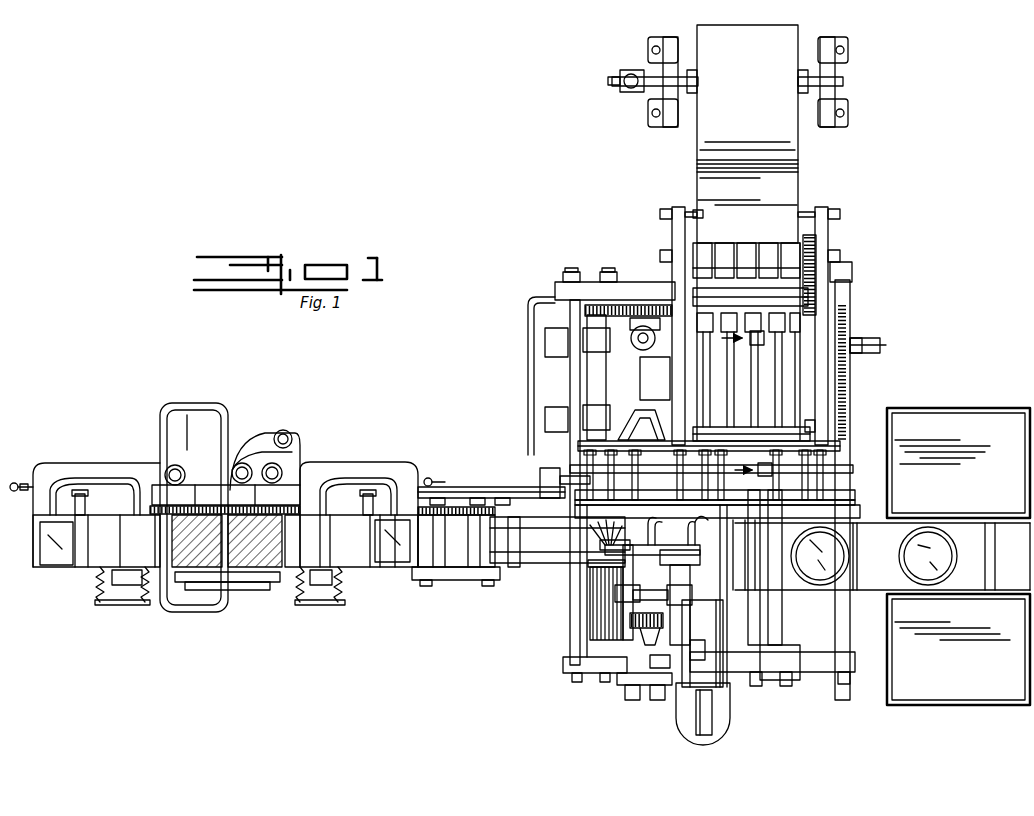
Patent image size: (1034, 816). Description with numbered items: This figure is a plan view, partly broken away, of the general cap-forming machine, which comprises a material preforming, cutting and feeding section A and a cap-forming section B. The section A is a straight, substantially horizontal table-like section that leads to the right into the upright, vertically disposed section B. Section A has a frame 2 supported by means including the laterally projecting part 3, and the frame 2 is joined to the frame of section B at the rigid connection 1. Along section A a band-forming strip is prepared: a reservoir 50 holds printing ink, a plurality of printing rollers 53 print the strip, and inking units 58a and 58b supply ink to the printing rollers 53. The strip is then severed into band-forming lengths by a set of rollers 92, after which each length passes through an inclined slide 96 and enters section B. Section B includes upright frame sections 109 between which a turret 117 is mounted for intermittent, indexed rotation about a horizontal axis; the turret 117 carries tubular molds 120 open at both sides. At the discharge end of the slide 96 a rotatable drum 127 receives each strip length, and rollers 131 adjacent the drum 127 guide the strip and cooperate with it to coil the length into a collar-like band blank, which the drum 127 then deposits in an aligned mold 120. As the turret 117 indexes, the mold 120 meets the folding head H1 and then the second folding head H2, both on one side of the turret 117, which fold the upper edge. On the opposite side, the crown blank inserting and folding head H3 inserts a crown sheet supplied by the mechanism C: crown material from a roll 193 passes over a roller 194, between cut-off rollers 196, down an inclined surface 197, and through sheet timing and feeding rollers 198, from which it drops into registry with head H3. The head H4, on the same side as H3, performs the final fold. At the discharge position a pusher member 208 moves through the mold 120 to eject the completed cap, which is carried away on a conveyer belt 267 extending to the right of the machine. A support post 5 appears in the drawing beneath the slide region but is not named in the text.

The rigid connection 1 is at (553, 488).
The frame 2 is at (472, 493).
The laterally projecting part 3 is at (213, 430).
The support post 5 is at (537, 545).
The reservoir 50 is at (62, 553).
The printing rollers 53 is at (243, 560).
The inking unit 58a is at (82, 466).
The inking unit 58b is at (323, 467).
The set of rollers 92 is at (448, 555).
The inclined slide 96 is at (555, 558).
The upright frame sections 109 is at (610, 285).
The turret 117 is at (823, 463).
The molds 120 is at (597, 470).
The drum 127 is at (600, 549).
The rollers 131 is at (627, 538).
The roll 193 is at (797, 162).
The roller 194 is at (802, 212).
The cut-off rollers 196 is at (797, 293).
The inclined surface 197 is at (802, 345).
The sheet timing and feeding rollers 198 is at (810, 427).
The pusher member 208 is at (750, 430).
The conveyer belt 267 is at (890, 578).
The material preforming, cutting and feeding section A is at (283, 598).
The cap-forming section B is at (780, 686).
The crown sheet positioning mechanism C is at (840, 243).
The folding head H1 is at (635, 560).
The second folding head H2 is at (667, 553).
The crown blank inserting and folding head H3 is at (720, 440).
The head H4 is at (783, 404).